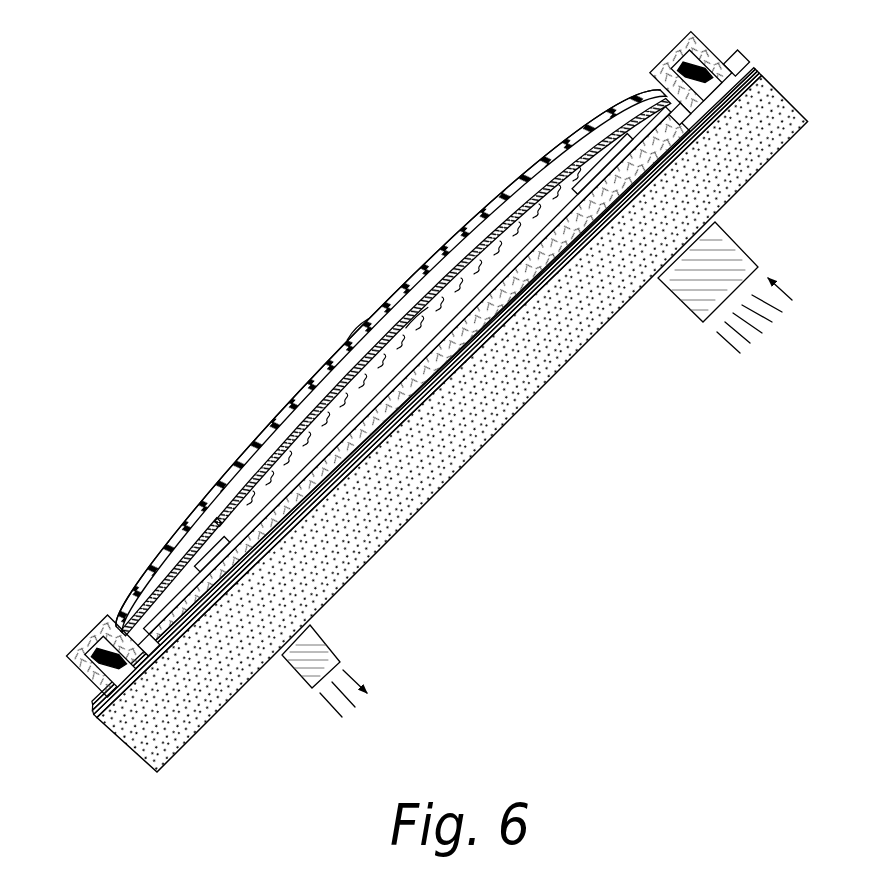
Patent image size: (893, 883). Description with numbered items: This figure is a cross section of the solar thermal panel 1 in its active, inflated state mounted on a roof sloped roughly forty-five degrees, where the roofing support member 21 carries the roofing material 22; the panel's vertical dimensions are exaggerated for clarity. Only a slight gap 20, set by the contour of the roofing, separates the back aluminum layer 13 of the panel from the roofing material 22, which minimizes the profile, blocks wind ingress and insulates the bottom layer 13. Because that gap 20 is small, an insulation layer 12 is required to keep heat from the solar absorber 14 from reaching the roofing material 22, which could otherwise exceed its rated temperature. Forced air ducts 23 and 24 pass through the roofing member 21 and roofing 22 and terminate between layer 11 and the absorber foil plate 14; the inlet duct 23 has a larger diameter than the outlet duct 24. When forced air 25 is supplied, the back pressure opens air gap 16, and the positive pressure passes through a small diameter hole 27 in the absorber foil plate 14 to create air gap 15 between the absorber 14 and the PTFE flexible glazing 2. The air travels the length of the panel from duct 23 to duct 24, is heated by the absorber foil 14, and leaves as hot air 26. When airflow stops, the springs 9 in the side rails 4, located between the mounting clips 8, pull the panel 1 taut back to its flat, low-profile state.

The solar thermal panel 1 is at (338, 343).
The flexible optically clear film 2 is at (307, 380).
The side rails 4 is at (88, 682).
The mounting clips 8 is at (100, 710).
The flat form springs 9 is at (104, 652).
The layer 11 is at (378, 437).
The insulation layer 12 is at (503, 288).
The back aluminum layer 13 is at (448, 375).
The solar absorber foil plate 14 is at (168, 563).
The air gap 15 is at (527, 194).
The air gap 16 is at (553, 200).
The gap 20 is at (590, 243).
The roofing support member 21 is at (760, 128).
The roofing material 22 is at (758, 73).
The inlet duct 23 is at (612, 155).
The outlet duct 24 is at (197, 570).
The forced air 25 is at (750, 337).
The hot air 26 is at (322, 705).
The small diameter hole 27 is at (223, 515).